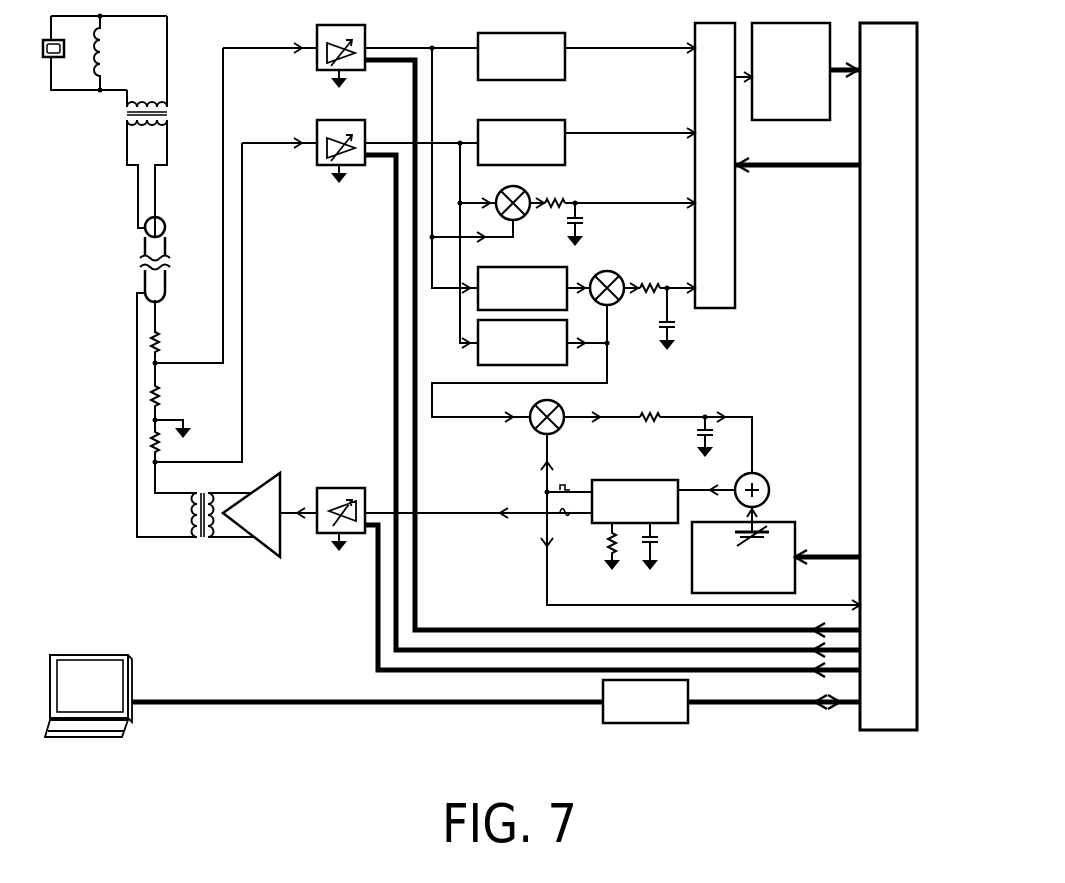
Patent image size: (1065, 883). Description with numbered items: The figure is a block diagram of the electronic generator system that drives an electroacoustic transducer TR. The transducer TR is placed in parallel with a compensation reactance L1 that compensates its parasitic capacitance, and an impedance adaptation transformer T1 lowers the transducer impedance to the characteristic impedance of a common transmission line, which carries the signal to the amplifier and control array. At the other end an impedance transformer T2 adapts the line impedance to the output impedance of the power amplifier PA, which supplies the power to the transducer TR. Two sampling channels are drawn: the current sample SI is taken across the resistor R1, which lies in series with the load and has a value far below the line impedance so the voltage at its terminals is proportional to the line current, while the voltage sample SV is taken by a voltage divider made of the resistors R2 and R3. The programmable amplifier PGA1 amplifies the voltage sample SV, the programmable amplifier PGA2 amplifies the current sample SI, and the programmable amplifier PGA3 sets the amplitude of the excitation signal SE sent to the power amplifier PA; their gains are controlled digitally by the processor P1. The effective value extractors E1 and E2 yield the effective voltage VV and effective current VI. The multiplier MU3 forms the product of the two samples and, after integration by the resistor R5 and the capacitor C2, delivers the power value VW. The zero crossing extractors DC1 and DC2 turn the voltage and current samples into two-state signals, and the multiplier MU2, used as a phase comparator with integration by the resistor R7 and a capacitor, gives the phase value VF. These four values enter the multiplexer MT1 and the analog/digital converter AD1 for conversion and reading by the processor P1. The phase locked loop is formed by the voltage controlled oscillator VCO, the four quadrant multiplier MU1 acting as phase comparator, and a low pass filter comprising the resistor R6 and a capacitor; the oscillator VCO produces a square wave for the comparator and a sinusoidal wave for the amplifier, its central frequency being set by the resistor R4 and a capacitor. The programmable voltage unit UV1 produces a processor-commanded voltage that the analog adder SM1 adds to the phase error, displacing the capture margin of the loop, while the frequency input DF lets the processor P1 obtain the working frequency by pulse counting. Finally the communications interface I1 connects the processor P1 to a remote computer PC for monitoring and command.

The transducer TR is at (98, 53).
The compensation reactance L1 is at (90, 53).
The impedance adaptation transformer T1 is at (156, 122).
The resistor R1 is at (174, 456).
The resistor R2 is at (163, 391).
The resistor R3 is at (163, 347).
The impedance transformer T2 is at (195, 415).
The power amplifier PA is at (251, 515).
The excitation signal SE is at (298, 503).
The voltage sample SV is at (270, 36).
The current sample SI is at (279, 132).
The programmable amplifier PGA1 is at (341, 56).
The programmable amplifier PGA2 is at (341, 151).
The programmable amplifier PGA3 is at (341, 519).
The effective value extractor E1 is at (521, 56).
The effective value extractor E2 is at (521, 142).
The effective voltage input VV is at (630, 42).
The effective current input VI is at (630, 127).
The multiplier MU3 is at (509, 198).
The resistor R5 is at (555, 196).
The capacitor C2 is at (583, 224).
The power input VW is at (630, 195).
The zero crossing extractor DC1 is at (522, 288).
The zero crossing extractor DC2 is at (522, 342).
The multiplier MU2 is at (614, 283).
The resistor R7 is at (650, 281).
The phase input VF is at (677, 281).
The multiplier MU1 is at (564, 415).
The resistor R6 is at (649, 408).
The analog adder SM1 is at (743, 495).
The voltage controlled oscillator VCO is at (612, 522).
The resistor R4 is at (617, 546).
The programmable voltage unit UV1 is at (776, 557).
The frequency input DF is at (822, 593).
The multiplexer MT1 is at (723, 165).
The analog/digital converter AD1 is at (806, 71).
The processor P1 is at (826, 376).
The remote computer PC is at (324, 696).
The communications interface I1 is at (731, 701).